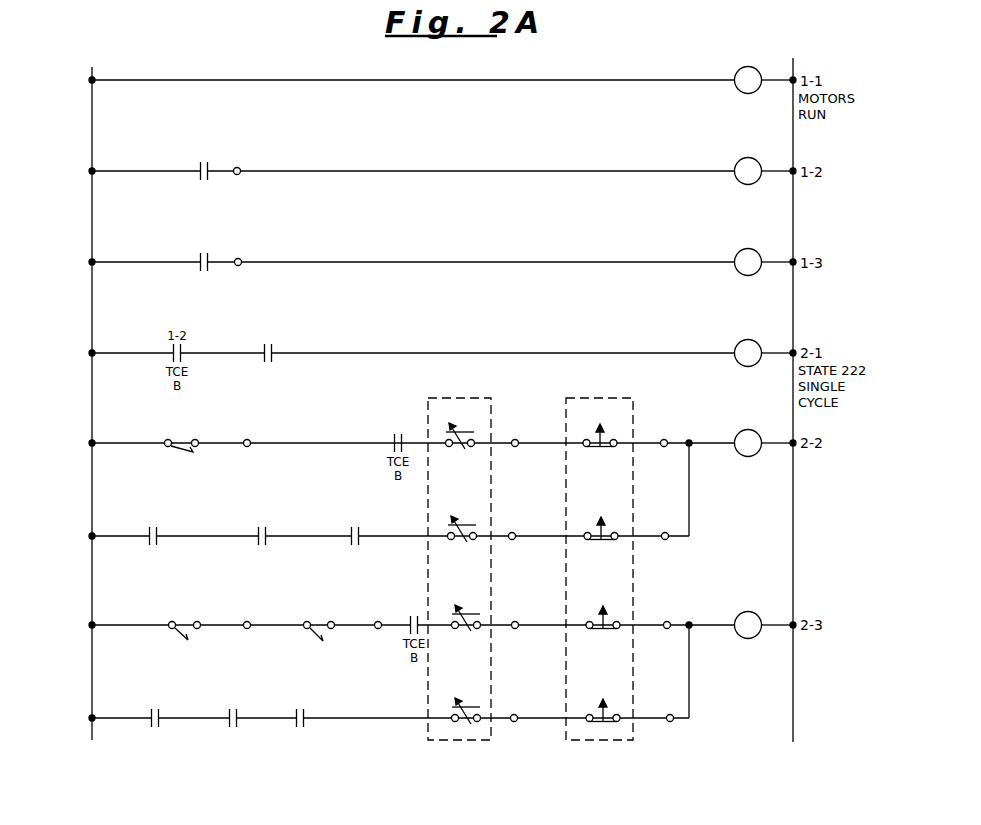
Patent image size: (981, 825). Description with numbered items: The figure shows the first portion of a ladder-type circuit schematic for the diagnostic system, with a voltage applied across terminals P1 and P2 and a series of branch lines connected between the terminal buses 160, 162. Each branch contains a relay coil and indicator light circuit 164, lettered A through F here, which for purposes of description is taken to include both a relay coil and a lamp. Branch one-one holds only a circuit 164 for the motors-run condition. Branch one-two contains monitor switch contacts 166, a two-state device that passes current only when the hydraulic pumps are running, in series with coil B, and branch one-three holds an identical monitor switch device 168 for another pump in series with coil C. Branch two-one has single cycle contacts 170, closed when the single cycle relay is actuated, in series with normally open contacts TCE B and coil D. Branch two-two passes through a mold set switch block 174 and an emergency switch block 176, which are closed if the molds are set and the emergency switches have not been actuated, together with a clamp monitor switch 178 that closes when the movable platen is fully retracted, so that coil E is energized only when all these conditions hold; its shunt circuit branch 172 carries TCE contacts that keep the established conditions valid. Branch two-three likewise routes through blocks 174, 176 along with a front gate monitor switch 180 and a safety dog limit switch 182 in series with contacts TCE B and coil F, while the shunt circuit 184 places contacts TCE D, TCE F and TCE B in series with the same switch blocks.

The terminal bus 160 is at (92, 131).
The terminal bus 162 is at (811, 387).
The relay coil and indicator light circuit 164 is at (740, 68).
The monitor switch contacts 166 is at (208, 175).
The monitor switch device 168 is at (198, 266).
The single cycle contacts 170 is at (272, 363).
The shunt circuit branch 172 is at (117, 534).
The mold set switch block 174 is at (428, 408).
The emergency switch block 176 is at (633, 408).
The clamp monitor switch device 178 is at (179, 451).
The front gate monitor switch 180 is at (185, 637).
The safety dog limit switch 182 is at (315, 636).
The shunt circuit 184 is at (393, 722).